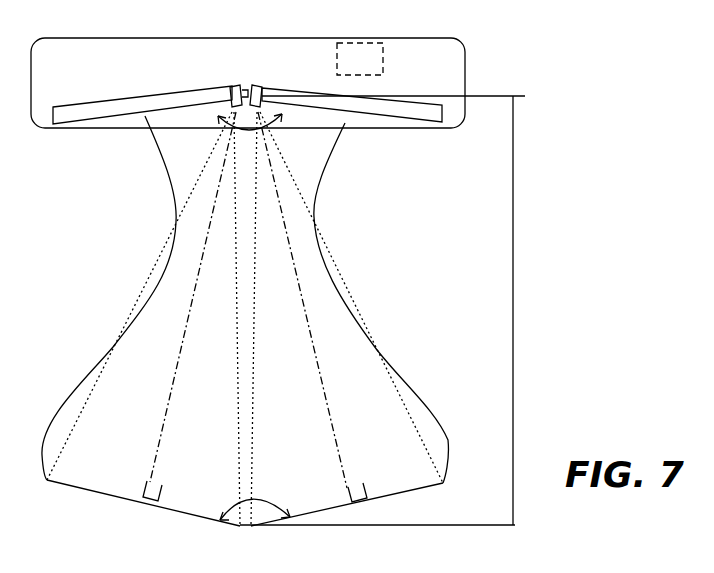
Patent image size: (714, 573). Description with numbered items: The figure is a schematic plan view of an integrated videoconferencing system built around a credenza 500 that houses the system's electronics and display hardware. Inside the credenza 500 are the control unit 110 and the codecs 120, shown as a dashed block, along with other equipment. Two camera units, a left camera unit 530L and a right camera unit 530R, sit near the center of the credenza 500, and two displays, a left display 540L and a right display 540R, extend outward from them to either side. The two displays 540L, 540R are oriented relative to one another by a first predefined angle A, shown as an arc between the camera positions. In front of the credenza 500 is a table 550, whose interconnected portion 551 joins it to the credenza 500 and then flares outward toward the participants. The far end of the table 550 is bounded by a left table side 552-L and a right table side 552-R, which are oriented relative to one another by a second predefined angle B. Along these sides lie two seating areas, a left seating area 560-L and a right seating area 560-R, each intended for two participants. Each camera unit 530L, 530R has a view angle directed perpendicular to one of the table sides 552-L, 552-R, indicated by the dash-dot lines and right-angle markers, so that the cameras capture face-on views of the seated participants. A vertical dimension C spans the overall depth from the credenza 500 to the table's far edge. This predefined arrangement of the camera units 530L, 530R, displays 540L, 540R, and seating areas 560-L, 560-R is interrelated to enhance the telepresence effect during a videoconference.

The credenza 500 is at (62, 38).
The control unit 110 is at (427, 43).
The codecs 120 is at (372, 43).
The left camera unit 530L is at (233, 85).
The right camera unit 530R is at (262, 85).
The left display 540L is at (118, 97).
The right display 540R is at (396, 78).
The table 550 is at (88, 364).
The interconnected portion 551 is at (168, 165).
The left table side 552-L is at (105, 485).
The right table side 552-R is at (407, 485).
The left seating area 560-L is at (139, 531).
The right seating area 560-R is at (357, 541).
The first predefined angle A is at (236, 121).
The second predefined angle B is at (255, 498).
The distance C is at (388, 310).